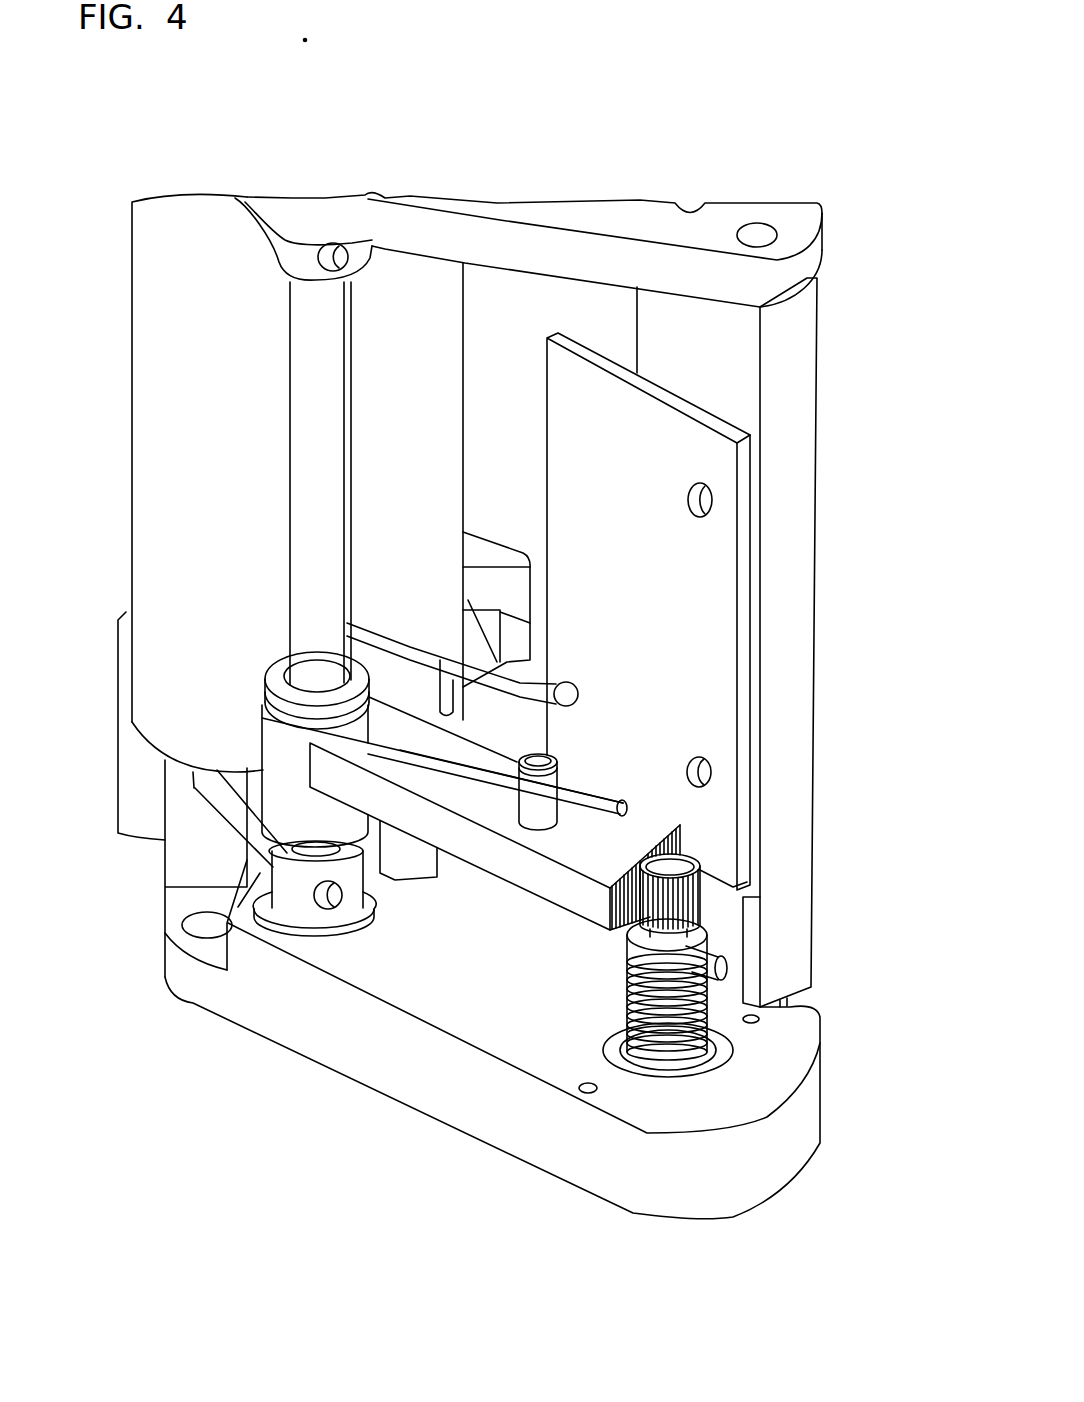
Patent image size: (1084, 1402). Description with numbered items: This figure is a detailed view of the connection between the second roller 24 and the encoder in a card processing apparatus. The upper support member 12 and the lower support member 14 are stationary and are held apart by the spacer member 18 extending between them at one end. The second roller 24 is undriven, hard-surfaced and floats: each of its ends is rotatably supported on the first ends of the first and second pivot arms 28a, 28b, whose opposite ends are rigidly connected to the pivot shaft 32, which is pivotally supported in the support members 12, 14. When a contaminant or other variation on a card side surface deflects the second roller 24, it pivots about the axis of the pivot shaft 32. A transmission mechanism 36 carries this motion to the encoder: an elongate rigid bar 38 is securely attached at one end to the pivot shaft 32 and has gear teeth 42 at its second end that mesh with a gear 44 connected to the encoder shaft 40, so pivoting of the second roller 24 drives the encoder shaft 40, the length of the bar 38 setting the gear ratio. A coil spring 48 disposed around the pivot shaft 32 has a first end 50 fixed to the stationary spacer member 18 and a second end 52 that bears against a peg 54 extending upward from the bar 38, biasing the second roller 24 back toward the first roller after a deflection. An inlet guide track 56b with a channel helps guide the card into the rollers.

The upper support member 12 is at (628, 216).
The lower support member 14 is at (277, 1012).
The spacer member 18 is at (790, 378).
The second roller 24 is at (210, 428).
The first pivot arm 28a is at (282, 247).
The second pivot arm 28b is at (225, 810).
The pivot shaft 32 is at (317, 590).
The transmission mechanism 36 is at (407, 886).
The bar 38 is at (467, 840).
The encoder shaft 40 is at (653, 1027).
The gear teeth 42 is at (677, 840).
The gear 44 is at (650, 917).
The coil spring 48 is at (275, 694).
The first end 50 is at (558, 712).
The second end 52 is at (624, 800).
The peg 54 is at (550, 778).
The inlet guide track 56b is at (457, 643).